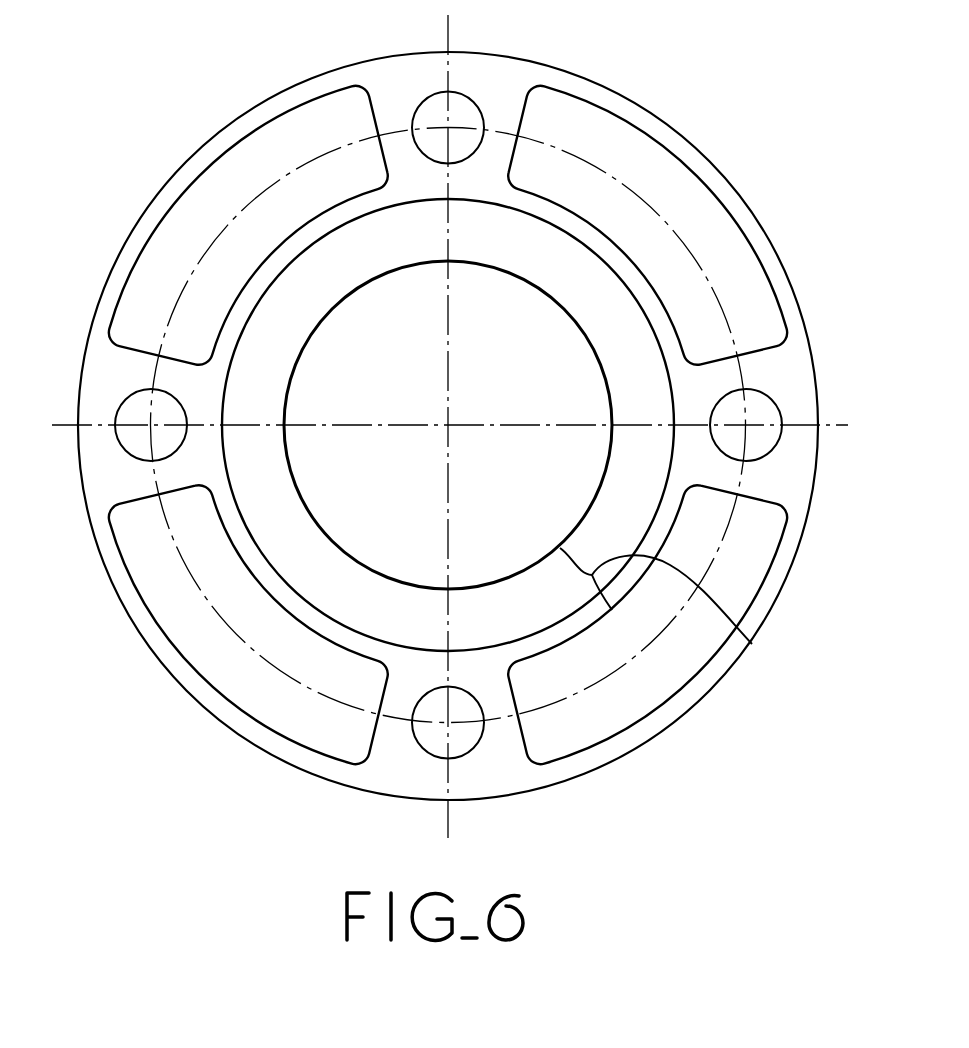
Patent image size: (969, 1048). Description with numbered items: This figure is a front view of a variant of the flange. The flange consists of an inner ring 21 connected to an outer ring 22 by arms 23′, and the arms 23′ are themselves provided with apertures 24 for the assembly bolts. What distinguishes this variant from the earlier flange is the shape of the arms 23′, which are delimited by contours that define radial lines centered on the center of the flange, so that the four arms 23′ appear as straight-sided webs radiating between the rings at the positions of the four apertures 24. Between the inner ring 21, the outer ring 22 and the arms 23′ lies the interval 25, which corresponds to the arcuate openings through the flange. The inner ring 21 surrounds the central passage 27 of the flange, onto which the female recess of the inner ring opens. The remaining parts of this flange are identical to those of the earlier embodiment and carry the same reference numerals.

The inner ring 21 is at (752, 644).
The outer ring 22 is at (125, 262).
The arms 23′ is at (112, 367).
The apertures 24 is at (138, 440).
The interval 25 is at (186, 211).
The passage 27 is at (536, 506).